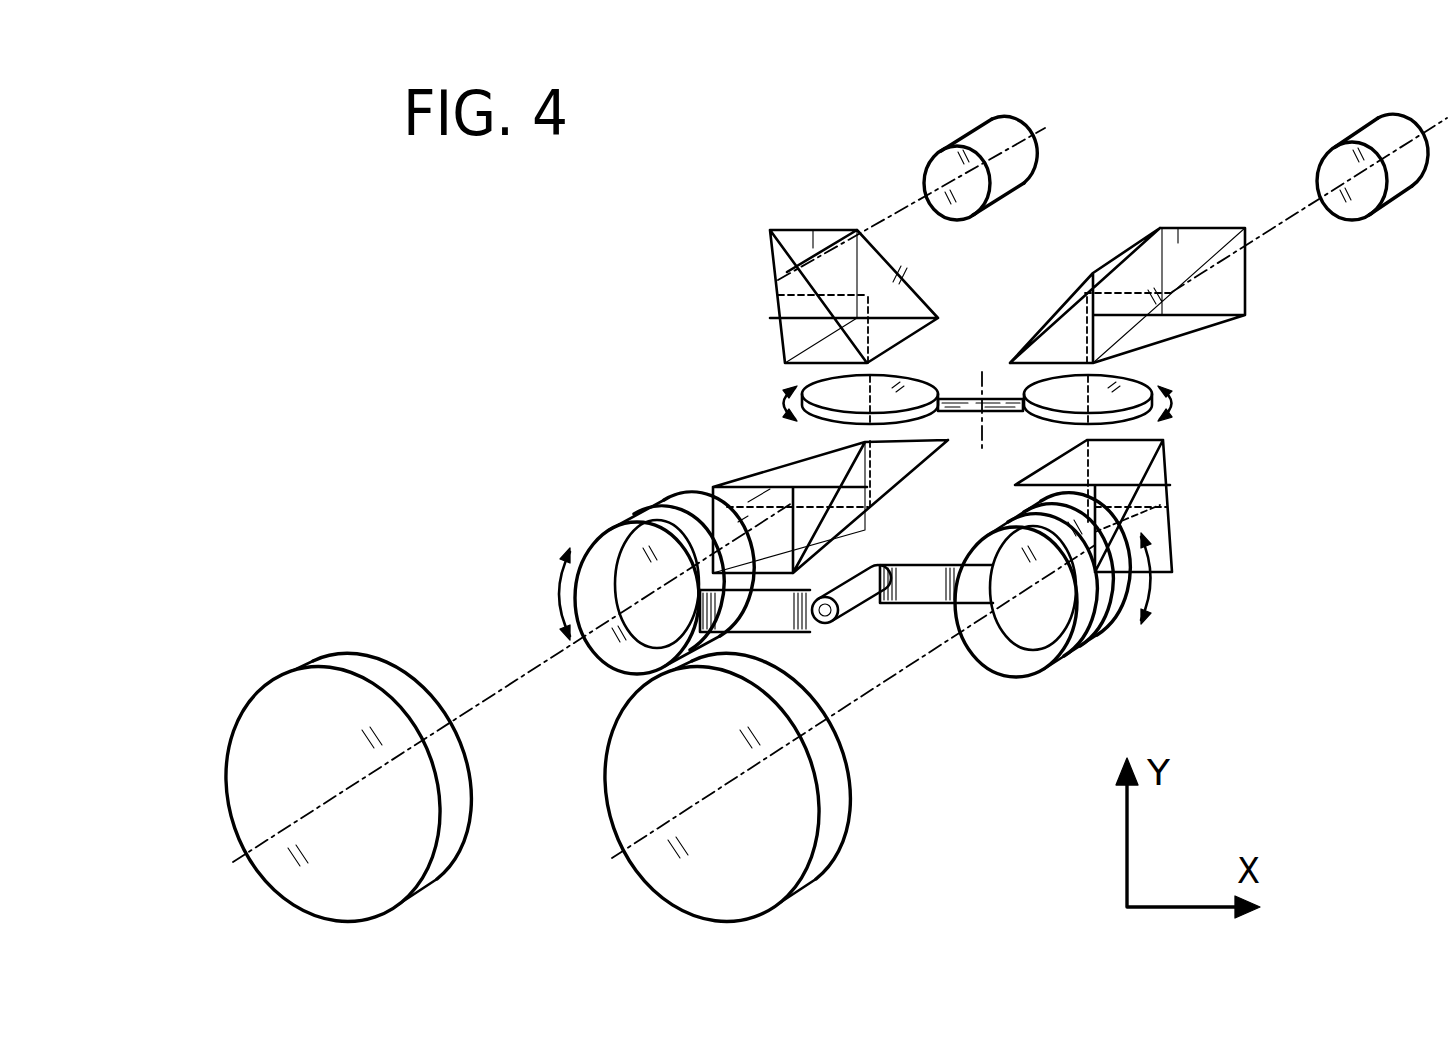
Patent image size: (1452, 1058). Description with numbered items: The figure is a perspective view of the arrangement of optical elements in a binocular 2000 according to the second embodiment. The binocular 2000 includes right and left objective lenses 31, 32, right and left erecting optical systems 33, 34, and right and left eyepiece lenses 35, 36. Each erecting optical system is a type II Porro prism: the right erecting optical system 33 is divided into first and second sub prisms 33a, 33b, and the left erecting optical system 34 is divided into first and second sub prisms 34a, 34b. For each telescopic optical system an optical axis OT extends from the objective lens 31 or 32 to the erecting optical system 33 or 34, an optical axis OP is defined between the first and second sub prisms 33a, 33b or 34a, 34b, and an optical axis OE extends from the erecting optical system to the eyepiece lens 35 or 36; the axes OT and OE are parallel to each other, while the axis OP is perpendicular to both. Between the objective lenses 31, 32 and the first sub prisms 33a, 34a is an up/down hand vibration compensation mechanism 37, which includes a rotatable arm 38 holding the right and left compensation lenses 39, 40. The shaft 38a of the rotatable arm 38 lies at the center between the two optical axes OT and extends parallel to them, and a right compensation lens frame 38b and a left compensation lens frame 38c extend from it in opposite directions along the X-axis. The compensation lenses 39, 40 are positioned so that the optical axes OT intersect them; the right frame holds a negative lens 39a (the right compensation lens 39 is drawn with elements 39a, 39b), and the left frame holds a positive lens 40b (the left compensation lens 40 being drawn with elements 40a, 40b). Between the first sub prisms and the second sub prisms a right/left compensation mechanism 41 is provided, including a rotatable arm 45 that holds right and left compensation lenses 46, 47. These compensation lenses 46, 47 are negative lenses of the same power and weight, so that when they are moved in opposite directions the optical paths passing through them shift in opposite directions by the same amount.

The binocular 2000 is at (503, 357).
The right objective lens 31 is at (292, 862).
The left objective lens 32 is at (672, 862).
The right erecting optical system 33 is at (780, 401).
The first sub prism 33a is at (718, 485).
The second sub prism 33b is at (770, 330).
The left erecting optical system 34 is at (1186, 400).
The first sub prism 34a is at (1172, 520).
The second sub prism 34b is at (1200, 297).
The right eyepiece lens 35 is at (977, 135).
The left eyepiece lens 36 is at (1373, 135).
The up/down hand vibration compensation mechanism 37 is at (943, 748).
The rotatable arm 38 is at (846, 648).
The shaft 38a is at (832, 622).
The right compensation lens frame 38b is at (775, 607).
The left compensation lens frame 38c is at (918, 592).
The right compensation lens 39 is at (638, 543).
The negative lens 39a is at (637, 564).
The lens 39b is at (690, 525).
The left compensation lens 40 is at (1121, 603).
The left compensation lens element 40a is at (1083, 620).
The positive lens 40b is at (1128, 612).
The right/left hand vibration compensation mechanism 41 is at (957, 388).
The rotatable arm 45 is at (998, 433).
The right compensation lens 46 is at (912, 393).
The left compensation lens 47 is at (1138, 404).
The optical axis OT is at (535, 667).
The optical axis OE is at (913, 203).
The optical axis OP is at (848, 393).